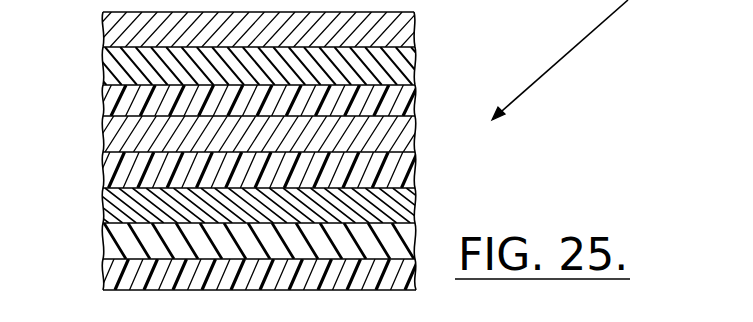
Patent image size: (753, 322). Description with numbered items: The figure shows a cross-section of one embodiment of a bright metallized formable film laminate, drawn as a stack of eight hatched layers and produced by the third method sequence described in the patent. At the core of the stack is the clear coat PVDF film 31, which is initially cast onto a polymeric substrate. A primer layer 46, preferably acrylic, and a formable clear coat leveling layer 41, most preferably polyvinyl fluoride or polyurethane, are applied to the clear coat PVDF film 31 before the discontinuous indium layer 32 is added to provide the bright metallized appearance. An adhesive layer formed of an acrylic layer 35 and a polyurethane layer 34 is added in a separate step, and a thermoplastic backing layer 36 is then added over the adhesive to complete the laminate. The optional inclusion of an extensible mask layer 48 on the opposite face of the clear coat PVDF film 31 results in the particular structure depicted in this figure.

The thermoplastic backing layer 36 is at (102, 37).
The acrylic layer 35 is at (102, 73).
The polyurethane layer 34 is at (102, 108).
The discontinuous indium layer 32 is at (102, 137).
The formable clear coat leveling layer 41 is at (102, 172).
The primer layer 46 is at (102, 205).
The clear coat PVDF film 31 is at (102, 240).
The extensible mask layer 48 is at (102, 281).